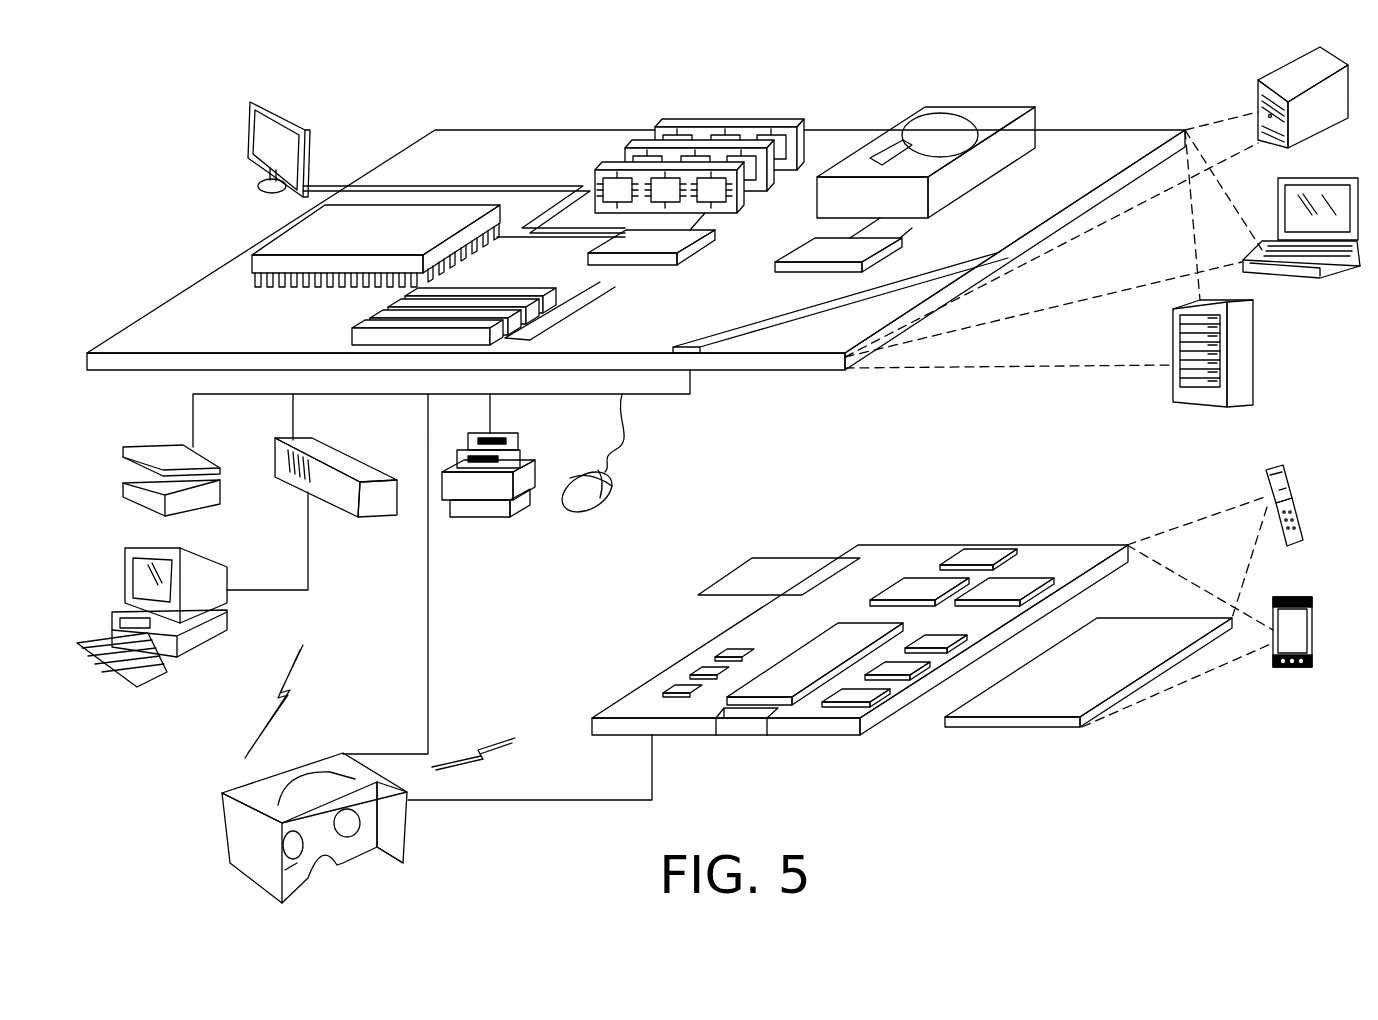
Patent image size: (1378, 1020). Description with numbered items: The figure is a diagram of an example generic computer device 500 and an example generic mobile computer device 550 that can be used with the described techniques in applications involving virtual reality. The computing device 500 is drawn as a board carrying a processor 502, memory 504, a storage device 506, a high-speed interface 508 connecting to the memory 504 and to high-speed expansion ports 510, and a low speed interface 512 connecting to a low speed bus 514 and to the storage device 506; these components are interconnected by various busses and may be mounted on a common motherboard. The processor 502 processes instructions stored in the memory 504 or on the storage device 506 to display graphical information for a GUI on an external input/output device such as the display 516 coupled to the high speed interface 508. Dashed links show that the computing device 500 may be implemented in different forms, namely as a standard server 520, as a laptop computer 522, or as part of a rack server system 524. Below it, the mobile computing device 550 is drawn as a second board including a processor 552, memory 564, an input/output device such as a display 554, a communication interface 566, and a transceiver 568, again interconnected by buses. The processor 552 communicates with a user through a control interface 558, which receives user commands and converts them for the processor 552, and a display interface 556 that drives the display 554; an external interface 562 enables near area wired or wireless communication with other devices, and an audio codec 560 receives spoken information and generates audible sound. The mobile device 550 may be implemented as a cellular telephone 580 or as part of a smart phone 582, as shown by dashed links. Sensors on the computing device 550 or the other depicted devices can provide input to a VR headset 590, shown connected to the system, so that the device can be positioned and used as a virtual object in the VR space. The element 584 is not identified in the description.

The generic computer device 500 is at (383, 78).
The processor 502 is at (278, 235).
The memory 504 is at (732, 122).
The storage device 506 is at (968, 105).
The high-speed interface 508 is at (665, 240).
The high-speed expansion ports 510 is at (378, 317).
The low speed interface 512 is at (812, 248).
The low speed bus 514 is at (695, 340).
The display 516 is at (253, 101).
The standard server 520 is at (1280, 77).
The laptop computer 522 is at (1337, 180).
The rack server system 524 is at (1255, 355).
The generic mobile computer device 550 is at (1172, 727).
The processor 552 is at (780, 668).
The display 554 is at (1128, 637).
The display interface 556 is at (863, 695).
The control interface 558 is at (900, 665).
The audio codec 560 is at (945, 633).
The external interface 562 is at (743, 720).
The memory 564 is at (693, 678).
The communication interface 566 is at (917, 578).
The transceiver 568 is at (1010, 583).
The cellular telephone 580 is at (968, 555).
The smart phone 582 is at (843, 557).
The battery 584 is at (757, 558).
The VR headset 590 is at (432, 822).